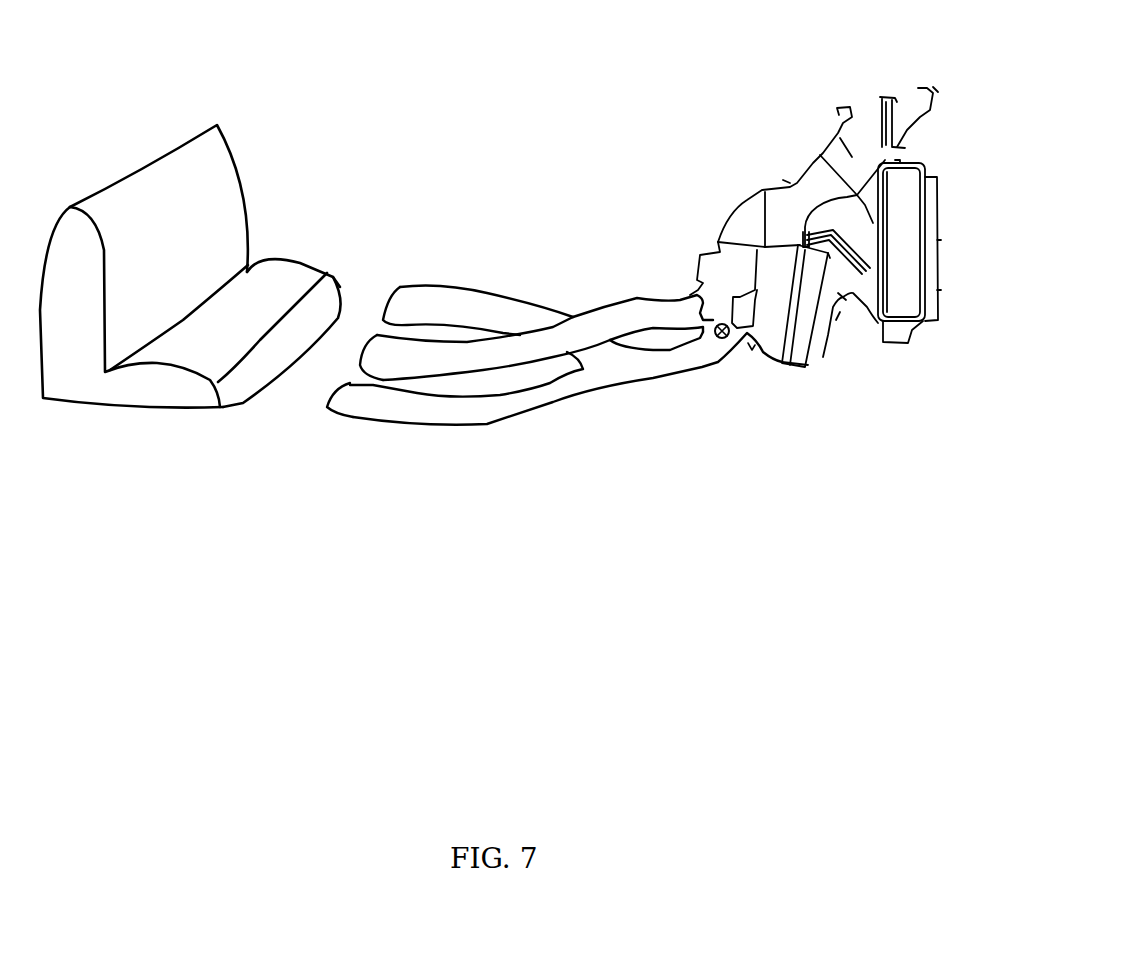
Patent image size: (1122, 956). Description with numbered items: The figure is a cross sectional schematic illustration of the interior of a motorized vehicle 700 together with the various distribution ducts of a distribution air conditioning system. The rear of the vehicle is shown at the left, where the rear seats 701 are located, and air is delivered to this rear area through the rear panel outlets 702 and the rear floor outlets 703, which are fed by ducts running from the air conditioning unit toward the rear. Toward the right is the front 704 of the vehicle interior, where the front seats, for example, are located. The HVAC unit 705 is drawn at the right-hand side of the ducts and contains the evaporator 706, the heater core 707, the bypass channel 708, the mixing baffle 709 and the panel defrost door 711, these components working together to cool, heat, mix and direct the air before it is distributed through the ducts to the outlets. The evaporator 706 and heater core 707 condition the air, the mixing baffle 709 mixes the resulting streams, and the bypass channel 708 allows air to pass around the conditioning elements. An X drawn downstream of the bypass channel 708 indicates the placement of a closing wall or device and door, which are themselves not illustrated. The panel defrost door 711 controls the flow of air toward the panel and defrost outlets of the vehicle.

The motorized vehicle 700 is at (705, 368).
The rear seats 701 is at (220, 178).
The rear panel outlets 702 is at (373, 333).
The rear floor outlets 703 is at (410, 302).
The front 704 is at (577, 152).
The HVAC unit 705 is at (993, 313).
The evaporator 706 is at (907, 303).
The heater core 707 is at (797, 352).
The bypass channel 708 is at (747, 333).
The mixing baffle 709 is at (807, 190).
The panel defrost door 711 is at (897, 127).